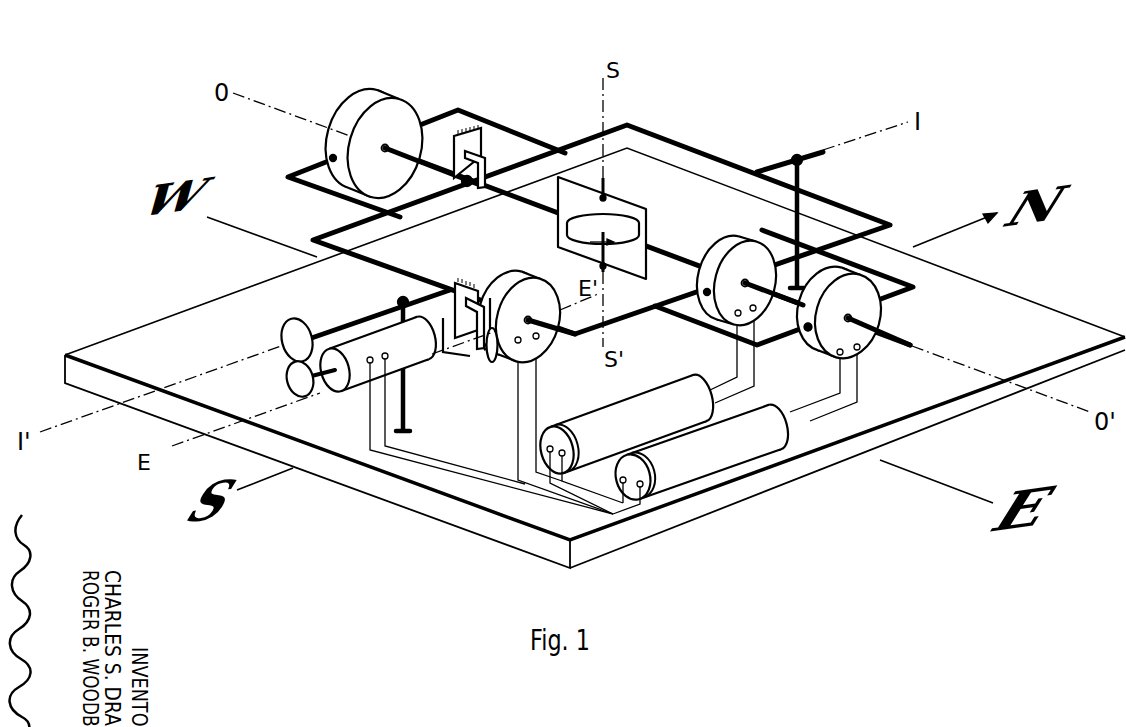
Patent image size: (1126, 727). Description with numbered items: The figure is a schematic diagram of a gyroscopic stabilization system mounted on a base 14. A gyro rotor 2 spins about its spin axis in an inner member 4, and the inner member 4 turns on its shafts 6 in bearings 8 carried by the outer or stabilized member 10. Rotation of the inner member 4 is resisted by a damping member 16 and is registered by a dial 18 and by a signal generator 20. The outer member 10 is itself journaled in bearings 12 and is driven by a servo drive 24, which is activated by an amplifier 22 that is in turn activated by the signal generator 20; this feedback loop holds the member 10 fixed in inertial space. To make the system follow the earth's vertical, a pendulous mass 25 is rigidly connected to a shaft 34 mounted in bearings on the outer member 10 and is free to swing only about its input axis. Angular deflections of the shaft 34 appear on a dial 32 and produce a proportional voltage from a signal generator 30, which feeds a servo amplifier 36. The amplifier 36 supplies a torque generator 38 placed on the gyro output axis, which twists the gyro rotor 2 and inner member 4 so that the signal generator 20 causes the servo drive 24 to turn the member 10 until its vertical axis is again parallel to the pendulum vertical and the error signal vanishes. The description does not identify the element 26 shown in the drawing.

The gyro rotor 2 is at (576, 233).
The inner member 4 is at (644, 207).
The shafts 6 is at (524, 202).
The bearings 8 is at (463, 186).
The outer or stabilized member 10 is at (867, 211).
The bearings 12 is at (797, 157).
The base 14 is at (672, 525).
The damping member 16 is at (350, 103).
The dial 18 is at (455, 130).
The signal generator 20 is at (722, 246).
The amplifier 22 is at (598, 412).
The servo drive 24 is at (338, 385).
The pendulous mass 25 is at (490, 365).
The direction indicator line 26 is at (922, 477).
The signal generator 30 is at (545, 262).
The dial 32 is at (458, 283).
The shaft 34 is at (492, 300).
The servo amplifier 36 is at (702, 467).
The torque generator 38 is at (882, 317).